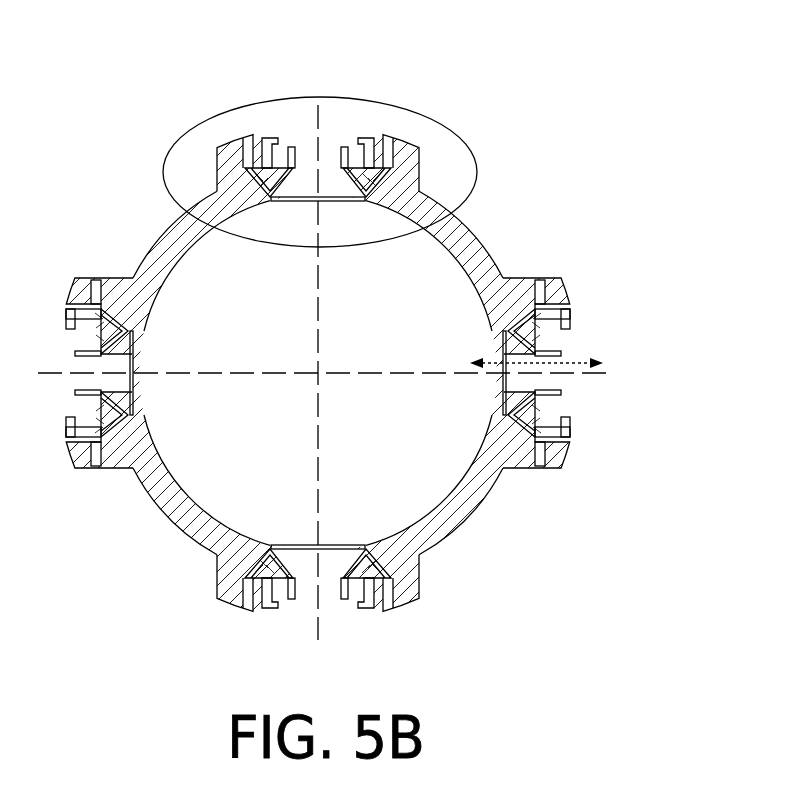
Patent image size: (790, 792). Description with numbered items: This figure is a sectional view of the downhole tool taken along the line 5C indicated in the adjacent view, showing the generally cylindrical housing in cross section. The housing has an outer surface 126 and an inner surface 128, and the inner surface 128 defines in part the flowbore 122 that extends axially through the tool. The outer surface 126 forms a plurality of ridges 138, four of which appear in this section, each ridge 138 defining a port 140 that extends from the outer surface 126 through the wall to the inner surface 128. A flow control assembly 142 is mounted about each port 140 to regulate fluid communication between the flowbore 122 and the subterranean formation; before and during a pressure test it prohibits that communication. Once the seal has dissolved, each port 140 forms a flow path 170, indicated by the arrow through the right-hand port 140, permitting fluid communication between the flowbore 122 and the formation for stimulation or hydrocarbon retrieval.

The section line for FIG. 5C is at (368, 97).
The flowbore 122 is at (307, 384).
The outer surface 126 is at (463, 521).
The inner surface 128 is at (470, 277).
The ridge 138 is at (530, 280).
The port 140 is at (500, 381).
The flow control assembly 142 is at (600, 313).
The flow path 170 is at (606, 361).